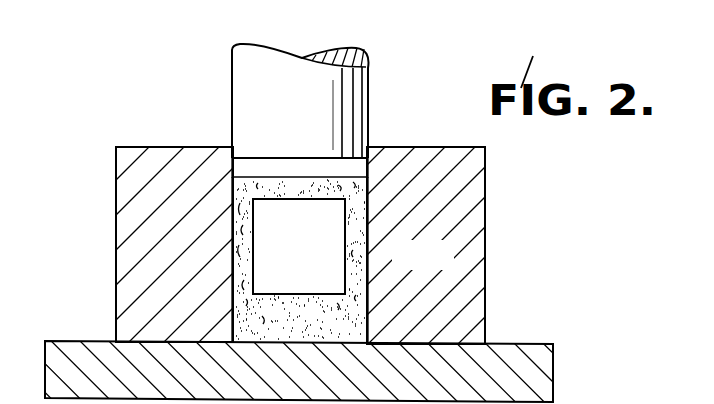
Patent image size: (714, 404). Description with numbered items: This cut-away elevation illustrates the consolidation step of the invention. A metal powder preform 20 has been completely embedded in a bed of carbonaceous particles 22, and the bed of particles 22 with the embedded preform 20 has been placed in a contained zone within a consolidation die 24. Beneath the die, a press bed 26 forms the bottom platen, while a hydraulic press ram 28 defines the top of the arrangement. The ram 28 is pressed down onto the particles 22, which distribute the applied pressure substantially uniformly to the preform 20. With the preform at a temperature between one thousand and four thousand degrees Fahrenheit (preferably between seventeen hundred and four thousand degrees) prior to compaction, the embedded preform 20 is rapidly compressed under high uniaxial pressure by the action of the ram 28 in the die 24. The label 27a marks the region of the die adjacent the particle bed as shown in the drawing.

The preform 20 is at (301, 246).
The bed of carbonaceous particles 22 is at (328, 321).
The consolidation die 24 is at (135, 197).
The press bed 26 is at (535, 378).
The cavity 27a is at (363, 229).
The hydraulic press ram 28 is at (258, 92).